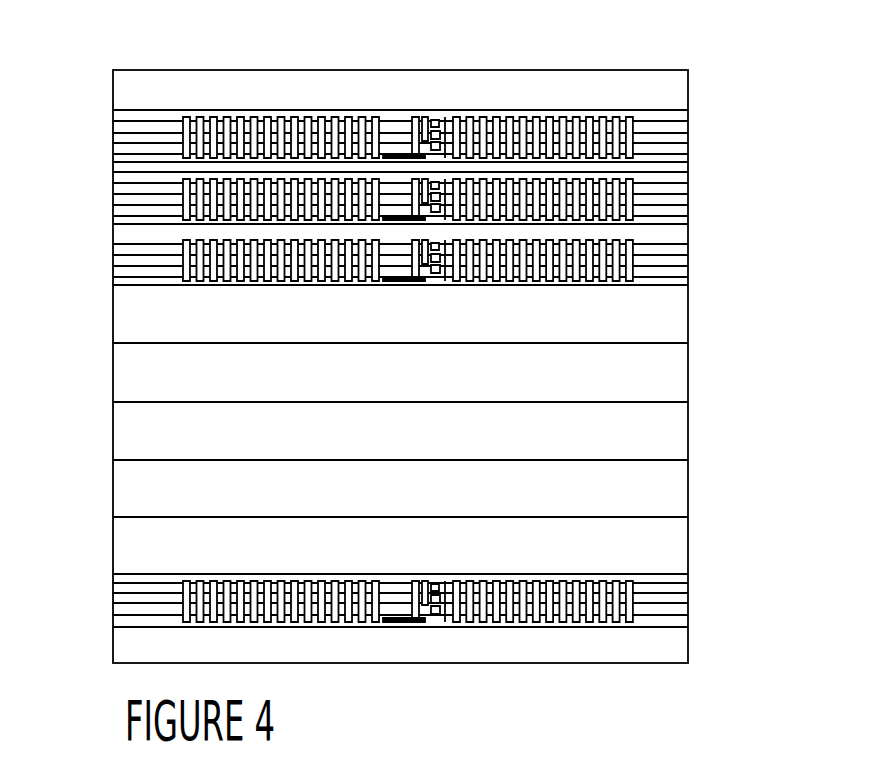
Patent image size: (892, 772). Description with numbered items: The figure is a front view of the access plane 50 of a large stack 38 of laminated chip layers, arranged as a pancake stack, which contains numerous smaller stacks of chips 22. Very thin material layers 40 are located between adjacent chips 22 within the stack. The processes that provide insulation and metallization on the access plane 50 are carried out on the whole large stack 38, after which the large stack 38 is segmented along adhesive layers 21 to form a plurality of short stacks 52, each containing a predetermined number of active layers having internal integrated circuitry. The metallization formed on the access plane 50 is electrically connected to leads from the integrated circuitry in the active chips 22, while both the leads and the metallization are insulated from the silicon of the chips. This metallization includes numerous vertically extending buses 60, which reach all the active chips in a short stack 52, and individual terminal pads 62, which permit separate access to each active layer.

The adhesive layer 21 is at (668, 172).
The chip 22 is at (673, 112).
The large stack 38 is at (83, 388).
The material layer 40 is at (660, 123).
The access plane 50 is at (680, 390).
The short stack 52 is at (665, 535).
The bus 60 is at (270, 125).
The terminal pad 62 is at (432, 120).